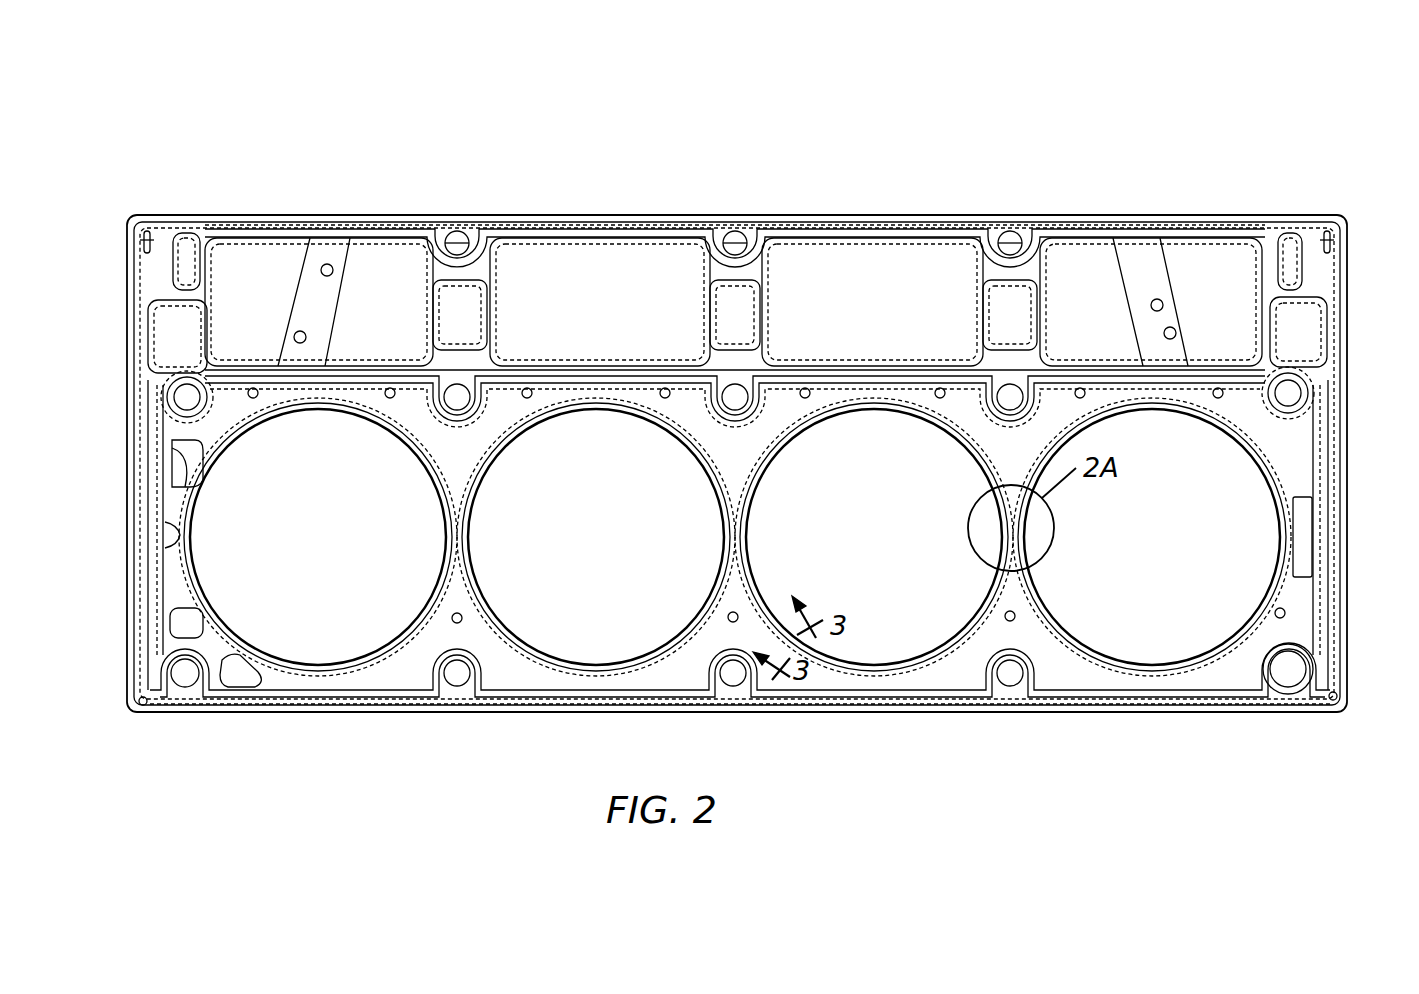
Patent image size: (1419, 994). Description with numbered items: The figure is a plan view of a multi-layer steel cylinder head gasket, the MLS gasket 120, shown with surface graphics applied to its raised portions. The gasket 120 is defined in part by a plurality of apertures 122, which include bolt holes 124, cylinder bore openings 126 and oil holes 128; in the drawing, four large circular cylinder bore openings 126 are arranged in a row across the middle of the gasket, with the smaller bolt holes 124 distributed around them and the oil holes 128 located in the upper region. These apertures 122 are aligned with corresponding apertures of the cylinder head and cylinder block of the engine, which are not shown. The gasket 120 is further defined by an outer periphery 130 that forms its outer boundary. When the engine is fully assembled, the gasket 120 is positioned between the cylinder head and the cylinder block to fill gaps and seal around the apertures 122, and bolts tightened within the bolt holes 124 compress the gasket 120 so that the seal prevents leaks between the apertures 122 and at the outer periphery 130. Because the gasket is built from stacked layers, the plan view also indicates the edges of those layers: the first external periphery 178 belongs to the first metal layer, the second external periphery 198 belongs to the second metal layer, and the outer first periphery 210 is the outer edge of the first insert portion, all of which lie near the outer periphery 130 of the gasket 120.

The MLS gasket 120 is at (1153, 152).
The apertures 122 is at (997, 268).
The bolt holes 124 is at (1012, 393).
The cylinder bore openings 126 is at (337, 546).
The oil holes 128 is at (664, 262).
The outer periphery 130 is at (614, 217).
The first external periphery 178 is at (520, 217).
The second external periphery 198 is at (236, 714).
The outer first periphery 210 is at (216, 217).